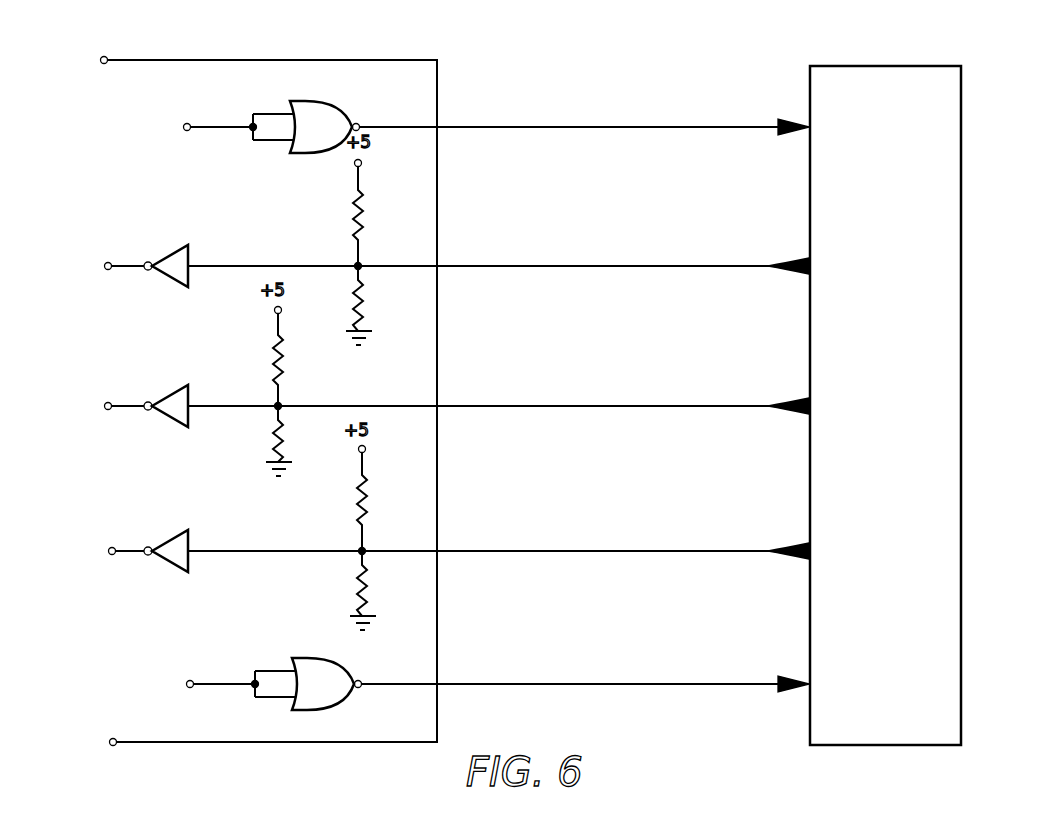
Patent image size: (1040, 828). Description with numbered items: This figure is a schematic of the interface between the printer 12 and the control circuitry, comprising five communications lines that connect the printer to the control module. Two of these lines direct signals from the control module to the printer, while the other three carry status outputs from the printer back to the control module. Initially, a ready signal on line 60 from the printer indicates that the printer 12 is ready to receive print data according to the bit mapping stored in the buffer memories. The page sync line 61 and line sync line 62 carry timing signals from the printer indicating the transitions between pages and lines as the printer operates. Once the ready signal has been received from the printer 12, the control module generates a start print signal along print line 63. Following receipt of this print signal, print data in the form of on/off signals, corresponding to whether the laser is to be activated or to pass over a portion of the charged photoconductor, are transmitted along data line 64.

The printer 12 is at (964, 303).
The ready line 60 is at (741, 266).
The page sync line 61 is at (755, 404).
The line sync line 62 is at (760, 549).
The print line 63 is at (706, 122).
The data line 64 is at (744, 682).